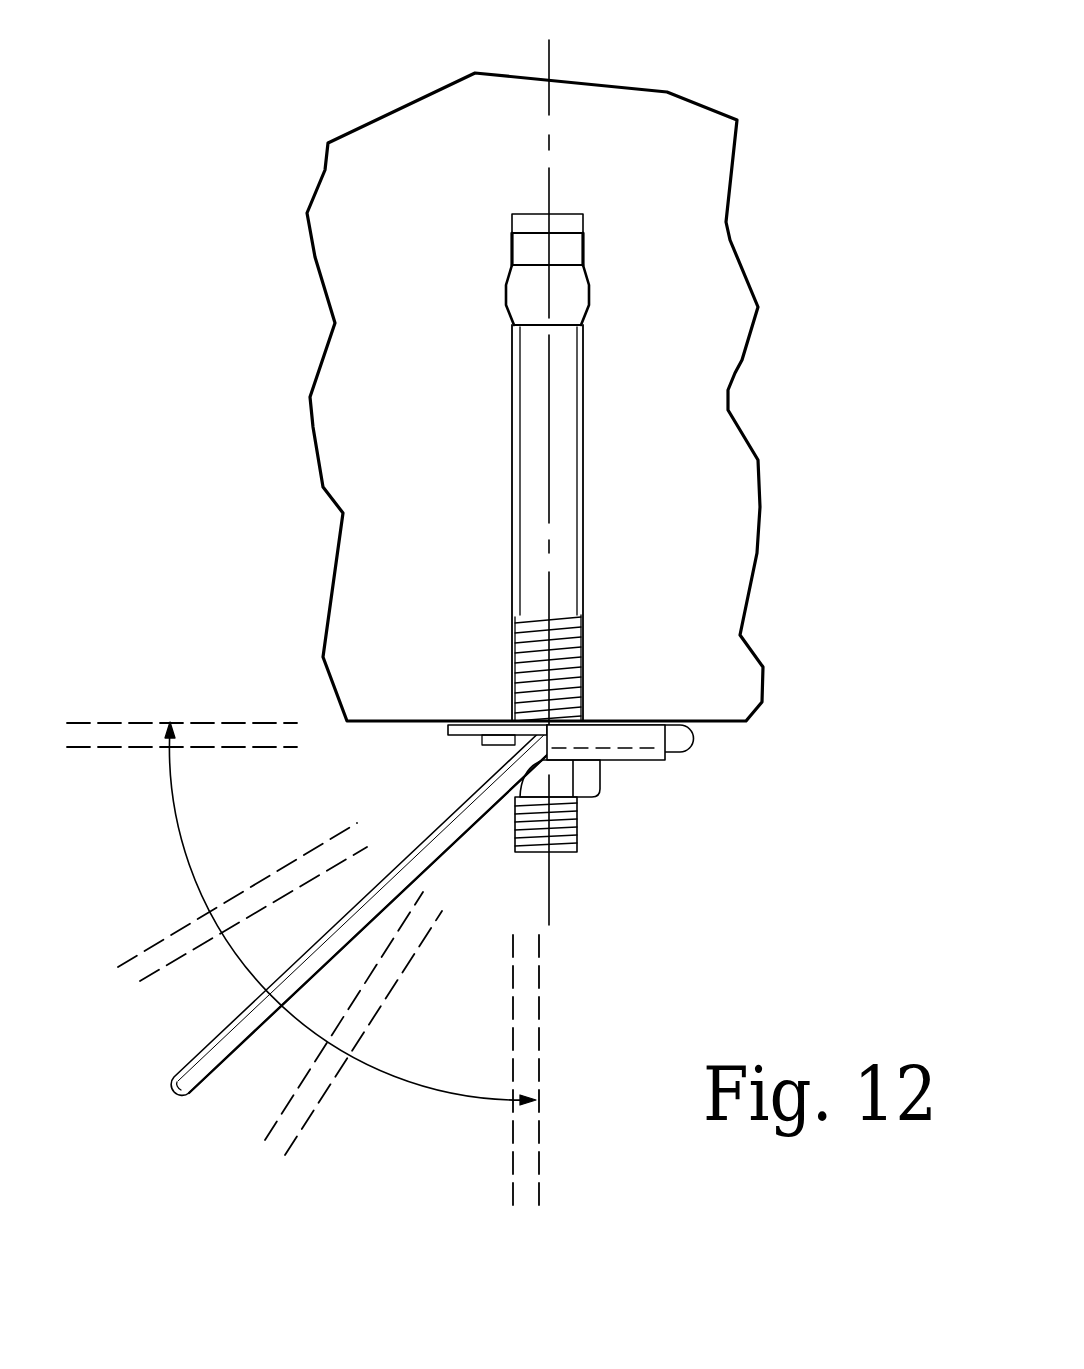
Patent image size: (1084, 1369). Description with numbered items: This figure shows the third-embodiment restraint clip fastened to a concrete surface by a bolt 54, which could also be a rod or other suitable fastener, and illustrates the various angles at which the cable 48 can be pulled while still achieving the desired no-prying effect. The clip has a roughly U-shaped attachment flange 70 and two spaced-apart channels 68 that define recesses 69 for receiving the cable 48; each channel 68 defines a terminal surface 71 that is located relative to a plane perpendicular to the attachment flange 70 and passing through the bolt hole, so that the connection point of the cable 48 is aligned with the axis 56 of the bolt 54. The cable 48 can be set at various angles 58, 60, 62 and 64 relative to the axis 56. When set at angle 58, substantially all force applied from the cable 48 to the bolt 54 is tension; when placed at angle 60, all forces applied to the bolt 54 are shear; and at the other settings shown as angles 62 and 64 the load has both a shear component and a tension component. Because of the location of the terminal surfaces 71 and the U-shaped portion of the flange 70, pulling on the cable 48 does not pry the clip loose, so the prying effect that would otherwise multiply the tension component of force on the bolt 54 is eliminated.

The cable 48 is at (240, 1013).
The bolt 54 is at (563, 395).
The axis 56 is at (550, 62).
The angle 58 is at (527, 1042).
The angle 60 is at (100, 738).
The angle 62 is at (173, 937).
The angle 64 is at (323, 1090).
The channel 68 is at (657, 752).
The recess 69 is at (618, 738).
The attachment flange 70 is at (447, 728).
The terminal surface 71 is at (550, 852).